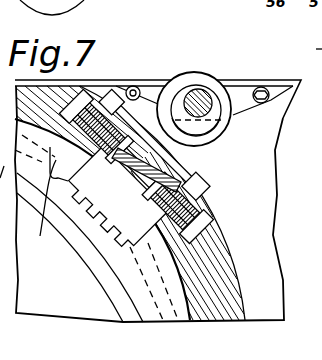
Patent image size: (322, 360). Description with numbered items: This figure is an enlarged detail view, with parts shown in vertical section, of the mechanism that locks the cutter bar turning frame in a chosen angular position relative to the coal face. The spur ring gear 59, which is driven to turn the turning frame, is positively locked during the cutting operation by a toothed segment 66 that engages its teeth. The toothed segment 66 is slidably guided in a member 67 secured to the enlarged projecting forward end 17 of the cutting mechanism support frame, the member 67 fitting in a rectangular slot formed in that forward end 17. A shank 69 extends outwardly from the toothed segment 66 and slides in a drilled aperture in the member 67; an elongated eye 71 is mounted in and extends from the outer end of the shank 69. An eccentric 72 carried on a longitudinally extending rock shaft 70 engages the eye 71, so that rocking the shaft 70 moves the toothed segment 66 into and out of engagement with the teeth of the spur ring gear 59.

The projecting forward end 17 is at (222, 262).
The spur ring gear 59 is at (198, 233).
The toothed segment 66 is at (49, 202).
The member 67 is at (183, 160).
The shank 69 is at (120, 146).
The rock shaft 70 is at (193, 79).
The elongated eye 71 is at (183, 78).
The eccentric 72 is at (226, 137).